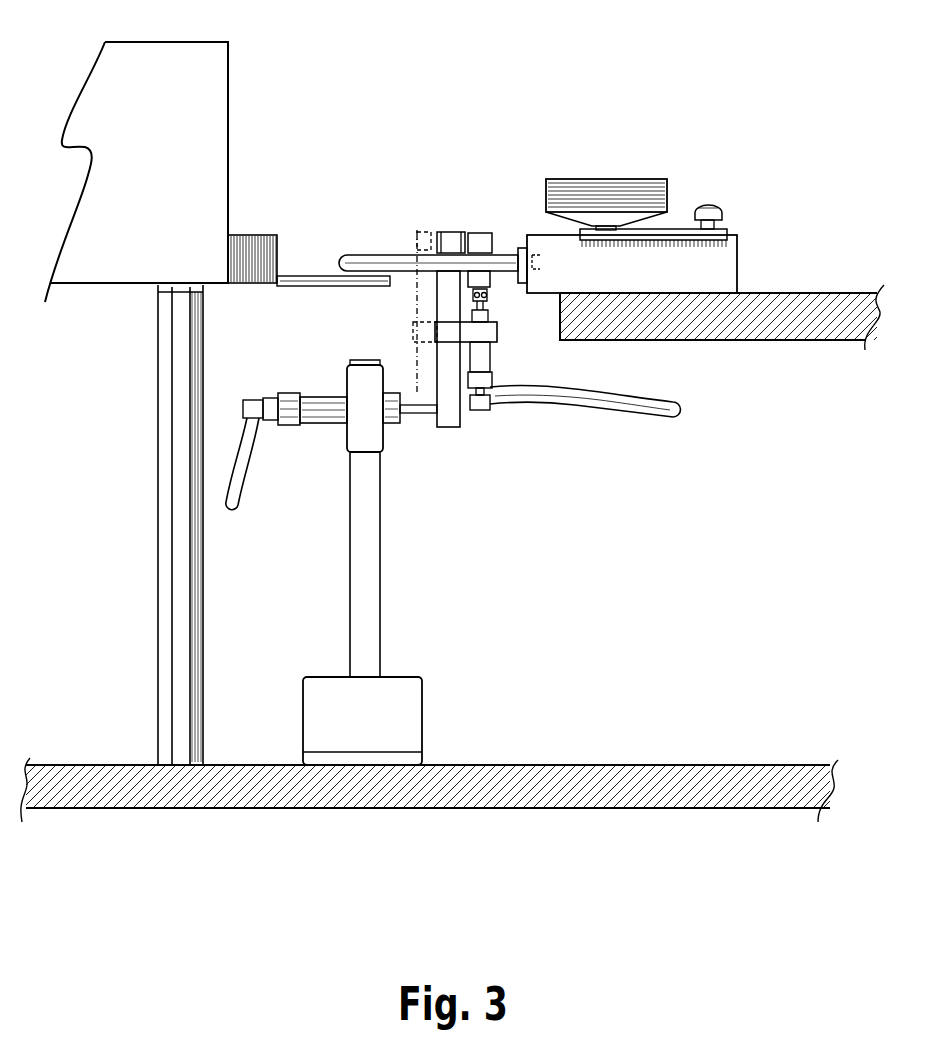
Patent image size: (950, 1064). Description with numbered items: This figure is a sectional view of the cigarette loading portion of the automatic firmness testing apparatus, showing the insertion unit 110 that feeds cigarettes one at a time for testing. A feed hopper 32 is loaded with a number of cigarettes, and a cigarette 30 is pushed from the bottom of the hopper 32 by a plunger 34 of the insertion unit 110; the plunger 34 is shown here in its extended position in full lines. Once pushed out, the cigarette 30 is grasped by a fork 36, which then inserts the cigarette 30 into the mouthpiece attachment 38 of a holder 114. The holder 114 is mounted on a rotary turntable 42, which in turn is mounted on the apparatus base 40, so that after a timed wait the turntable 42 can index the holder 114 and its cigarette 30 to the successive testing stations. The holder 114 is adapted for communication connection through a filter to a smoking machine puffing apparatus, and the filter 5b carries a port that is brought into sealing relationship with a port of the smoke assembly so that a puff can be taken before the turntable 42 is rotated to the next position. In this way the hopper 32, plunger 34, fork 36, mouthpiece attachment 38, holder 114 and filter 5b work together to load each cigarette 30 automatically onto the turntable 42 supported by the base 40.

The feed hopper 32 is at (230, 108).
The cigarette 30 is at (343, 255).
The fork 36 is at (485, 233).
The mouthpiece attachment 38 is at (518, 250).
The filter 5b is at (664, 186).
The cigarette holder 114 is at (738, 258).
The rotary turntable 42 is at (693, 342).
The plunger 34 is at (308, 398).
The insertion unit 110 is at (422, 474).
The apparatus base 40 is at (602, 758).